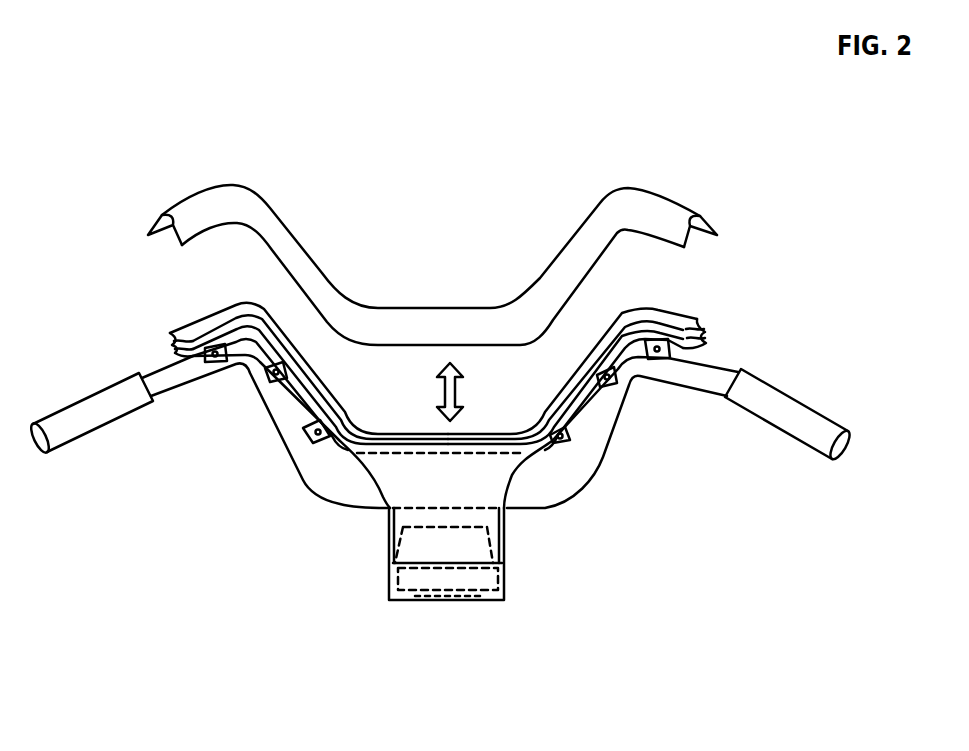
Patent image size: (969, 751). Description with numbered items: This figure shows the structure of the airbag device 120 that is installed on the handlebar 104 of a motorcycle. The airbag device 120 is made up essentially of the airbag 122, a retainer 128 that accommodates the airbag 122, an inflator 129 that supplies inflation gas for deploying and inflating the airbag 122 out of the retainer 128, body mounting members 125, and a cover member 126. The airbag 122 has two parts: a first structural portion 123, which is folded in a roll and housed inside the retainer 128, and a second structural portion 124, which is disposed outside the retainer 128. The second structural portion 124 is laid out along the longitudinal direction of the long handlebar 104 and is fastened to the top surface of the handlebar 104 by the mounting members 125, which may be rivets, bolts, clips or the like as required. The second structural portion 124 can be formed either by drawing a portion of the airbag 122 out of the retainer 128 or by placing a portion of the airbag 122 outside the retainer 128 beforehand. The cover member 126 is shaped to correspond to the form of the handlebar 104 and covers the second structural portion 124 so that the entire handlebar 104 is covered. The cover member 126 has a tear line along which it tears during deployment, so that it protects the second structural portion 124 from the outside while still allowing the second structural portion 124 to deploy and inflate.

The handlebar 104 is at (163, 373).
The airbag device 120 is at (642, 538).
The airbag 122 is at (255, 558).
The first structural portion 123 is at (397, 580).
The second structural portion 124 is at (348, 448).
The mounting members 125 is at (552, 435).
The cover member 126 is at (563, 236).
The retainer 128 is at (520, 590).
The inflator 129 is at (460, 594).